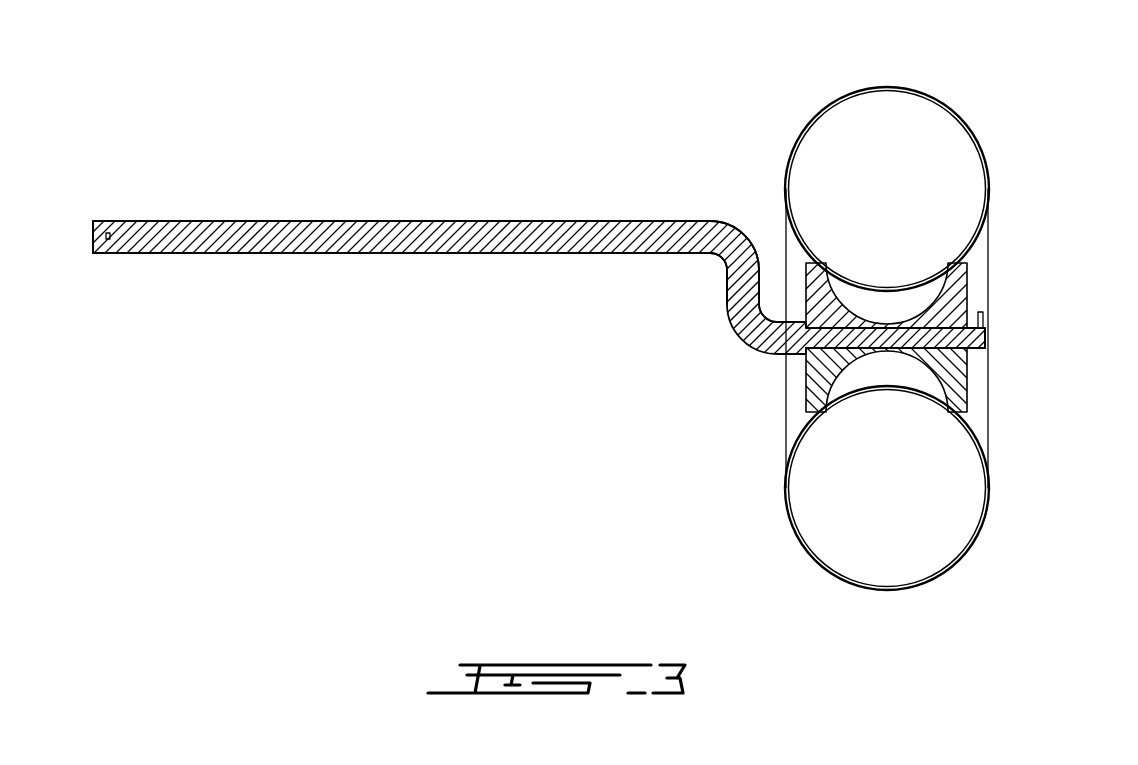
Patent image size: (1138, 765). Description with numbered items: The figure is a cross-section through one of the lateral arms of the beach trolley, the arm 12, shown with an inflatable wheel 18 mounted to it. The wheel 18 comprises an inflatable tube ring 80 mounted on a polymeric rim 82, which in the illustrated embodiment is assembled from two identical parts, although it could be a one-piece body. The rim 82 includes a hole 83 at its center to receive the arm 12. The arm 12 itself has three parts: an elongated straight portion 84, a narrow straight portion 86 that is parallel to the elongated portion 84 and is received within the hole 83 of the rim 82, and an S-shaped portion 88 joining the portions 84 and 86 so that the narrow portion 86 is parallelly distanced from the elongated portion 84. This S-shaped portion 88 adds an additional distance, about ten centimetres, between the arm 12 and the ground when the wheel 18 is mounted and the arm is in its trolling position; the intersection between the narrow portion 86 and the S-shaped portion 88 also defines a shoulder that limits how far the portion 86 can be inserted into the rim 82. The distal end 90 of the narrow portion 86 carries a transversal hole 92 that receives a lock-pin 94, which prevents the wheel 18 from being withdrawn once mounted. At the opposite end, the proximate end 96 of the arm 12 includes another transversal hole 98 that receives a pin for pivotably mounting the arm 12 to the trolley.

The arm 12 is at (384, 212).
The wheel 18 is at (982, 134).
The inflatable tube ring 80 is at (983, 518).
The polymeric rim 82 is at (975, 285).
The hole 83 is at (927, 346).
The elongated straight portion 84 is at (458, 247).
The narrow straight portion 86 is at (806, 377).
The S-shaped portion 88 is at (743, 233).
The distal end 90 is at (987, 345).
The transversal hole 92 is at (985, 334).
The lock-pin 94 is at (985, 317).
The proximate end 96 is at (97, 254).
The transversal hole 98 is at (108, 233).